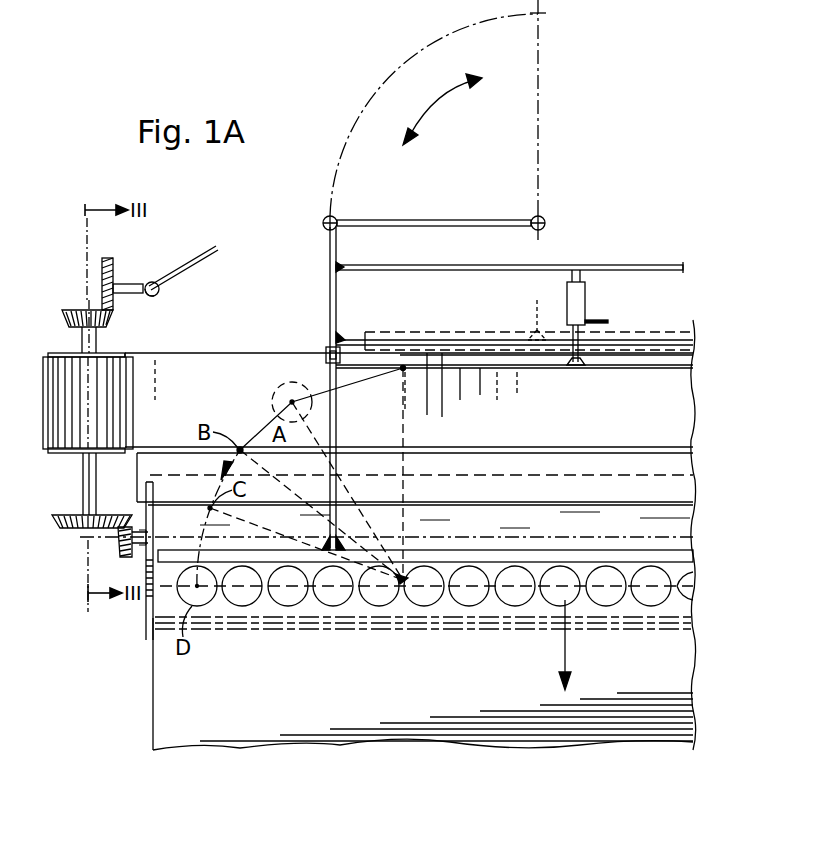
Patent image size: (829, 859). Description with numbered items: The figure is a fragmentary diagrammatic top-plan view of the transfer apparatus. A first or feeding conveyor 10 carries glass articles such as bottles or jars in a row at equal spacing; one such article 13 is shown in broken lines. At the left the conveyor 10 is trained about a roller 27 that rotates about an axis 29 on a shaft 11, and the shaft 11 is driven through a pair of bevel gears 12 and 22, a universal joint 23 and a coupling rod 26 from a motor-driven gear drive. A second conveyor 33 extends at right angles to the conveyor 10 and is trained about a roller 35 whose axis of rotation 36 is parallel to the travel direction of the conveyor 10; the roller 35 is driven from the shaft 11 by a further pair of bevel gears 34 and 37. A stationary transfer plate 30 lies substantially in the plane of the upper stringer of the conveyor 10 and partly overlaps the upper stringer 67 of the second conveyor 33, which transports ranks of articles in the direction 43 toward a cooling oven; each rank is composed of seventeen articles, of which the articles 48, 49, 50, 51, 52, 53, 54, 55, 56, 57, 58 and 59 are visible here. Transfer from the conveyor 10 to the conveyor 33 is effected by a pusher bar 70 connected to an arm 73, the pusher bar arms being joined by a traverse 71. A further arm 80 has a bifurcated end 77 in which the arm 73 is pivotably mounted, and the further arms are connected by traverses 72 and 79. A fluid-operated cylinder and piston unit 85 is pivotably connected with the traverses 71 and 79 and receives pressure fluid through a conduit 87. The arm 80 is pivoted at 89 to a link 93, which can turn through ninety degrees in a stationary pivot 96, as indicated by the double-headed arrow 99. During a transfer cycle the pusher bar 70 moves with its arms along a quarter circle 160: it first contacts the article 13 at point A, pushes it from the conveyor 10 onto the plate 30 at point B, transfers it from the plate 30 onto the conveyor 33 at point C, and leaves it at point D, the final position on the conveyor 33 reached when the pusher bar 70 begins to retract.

The first or feeding conveyor 10 is at (218, 353).
The shaft 11 is at (91, 345).
The bevel gear 12 is at (78, 310).
The article 13 is at (292, 382).
The bevel gear 22 is at (105, 258).
The universal joint 23 is at (158, 294).
The coupling rod 26 is at (205, 256).
The roller 27 is at (52, 352).
The axis 29 is at (97, 336).
The stationary transfer plate 30 is at (137, 458).
The second conveyor 33 is at (512, 468).
The bevel gear 34 is at (58, 523).
The roller 35 is at (147, 600).
The axis of rotation 36 is at (80, 540).
The bevel gear 37 is at (118, 542).
The direction 43 is at (564, 641).
The article 48 is at (212, 605).
The article 49 is at (245, 605).
The article 50 is at (292, 605).
The article 51 is at (333, 605).
The article 52 is at (383, 605).
The article 53 is at (425, 605).
The article 54 is at (458, 597).
The article 55 is at (504, 597).
The article 56 is at (549, 597).
The article 57 is at (595, 597).
The article 58 is at (640, 597).
The article 59 is at (686, 604).
The upper stringer 67 is at (309, 711).
The pusher bar 70 is at (410, 333).
The traverse 71 is at (633, 362).
The traverse 72 is at (352, 338).
The arm 73 is at (338, 426).
The bifurcated end 77 is at (327, 352).
The traverse 79 is at (625, 265).
The arm 80 is at (329, 291).
The fluid-operated cylinder and piston unit 85 is at (566, 297).
The conduit 87 is at (593, 320).
The pivot 89 is at (325, 218).
The link 93 is at (395, 220).
The stationary pivot 96 is at (543, 216).
The double-headed arrow 99 is at (447, 99).
The quarter circle 160 is at (266, 424).